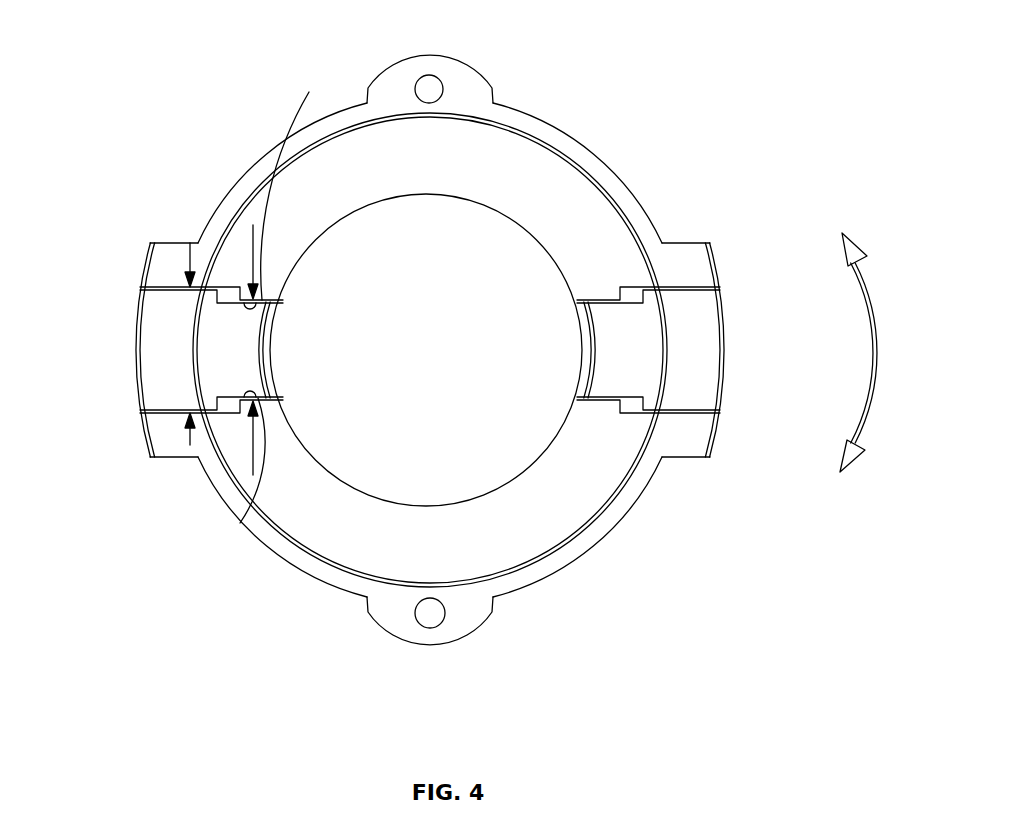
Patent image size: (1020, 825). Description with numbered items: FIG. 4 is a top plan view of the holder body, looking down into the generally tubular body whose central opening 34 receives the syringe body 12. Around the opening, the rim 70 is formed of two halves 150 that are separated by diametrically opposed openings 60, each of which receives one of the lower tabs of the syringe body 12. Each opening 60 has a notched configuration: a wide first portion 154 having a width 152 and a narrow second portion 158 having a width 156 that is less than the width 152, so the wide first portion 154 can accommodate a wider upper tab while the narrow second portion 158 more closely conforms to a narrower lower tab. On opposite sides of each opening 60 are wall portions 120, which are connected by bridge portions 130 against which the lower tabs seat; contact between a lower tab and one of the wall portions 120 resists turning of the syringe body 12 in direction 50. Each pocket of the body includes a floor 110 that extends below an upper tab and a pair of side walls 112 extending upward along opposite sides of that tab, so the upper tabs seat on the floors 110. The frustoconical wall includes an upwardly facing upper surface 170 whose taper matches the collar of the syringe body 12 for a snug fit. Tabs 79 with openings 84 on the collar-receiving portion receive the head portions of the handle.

The syringe body 12 is at (396, 348).
The central opening 34 is at (495, 445).
The direction 50 is at (873, 338).
The opening 60 is at (215, 382).
The rim 70 is at (292, 143).
The tab 79 is at (465, 80).
The opening 84 is at (428, 90).
The floor 110 is at (162, 345).
The side wall 112 is at (152, 290).
The wall portion 120 is at (212, 537).
The bridge portion 130 is at (588, 335).
The half 150 is at (253, 183).
The width 152 is at (183, 433).
The wide first portion 154 is at (207, 327).
The width 156 is at (198, 240).
The narrow second portion 158 is at (255, 345).
The upper surface 170 is at (588, 200).